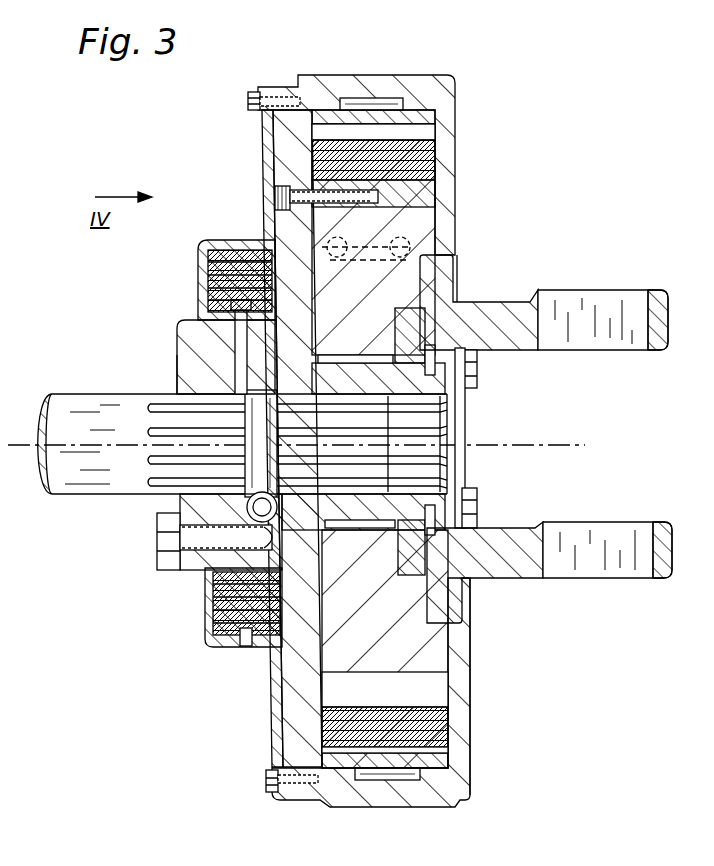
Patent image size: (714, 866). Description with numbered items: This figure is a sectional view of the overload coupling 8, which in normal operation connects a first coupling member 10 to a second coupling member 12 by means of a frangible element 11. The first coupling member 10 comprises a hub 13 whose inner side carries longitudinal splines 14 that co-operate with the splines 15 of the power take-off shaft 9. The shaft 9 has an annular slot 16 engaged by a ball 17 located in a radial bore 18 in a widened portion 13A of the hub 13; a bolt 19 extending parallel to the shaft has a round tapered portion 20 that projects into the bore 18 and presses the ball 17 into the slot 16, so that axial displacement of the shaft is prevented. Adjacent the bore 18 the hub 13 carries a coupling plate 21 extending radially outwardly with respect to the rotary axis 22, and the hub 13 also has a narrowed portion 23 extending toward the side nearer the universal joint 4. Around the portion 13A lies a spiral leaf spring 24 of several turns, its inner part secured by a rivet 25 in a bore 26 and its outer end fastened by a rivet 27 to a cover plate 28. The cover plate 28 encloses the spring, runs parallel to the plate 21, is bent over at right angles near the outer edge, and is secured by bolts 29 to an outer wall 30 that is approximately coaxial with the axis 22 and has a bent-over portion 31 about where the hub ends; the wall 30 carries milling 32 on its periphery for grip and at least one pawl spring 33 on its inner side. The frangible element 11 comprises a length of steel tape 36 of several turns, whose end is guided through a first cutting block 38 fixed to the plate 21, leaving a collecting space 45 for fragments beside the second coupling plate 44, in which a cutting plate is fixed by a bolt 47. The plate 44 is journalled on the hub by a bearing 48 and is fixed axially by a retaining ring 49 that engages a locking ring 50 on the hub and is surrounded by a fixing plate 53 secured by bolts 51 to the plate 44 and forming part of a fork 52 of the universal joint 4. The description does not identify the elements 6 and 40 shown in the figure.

The universal joint 4 is at (640, 290).
The upper flange arm 6 is at (462, 283).
The overload coupling 8 is at (504, 688).
The power take-off shaft 9 is at (92, 397).
The first coupling member 10 is at (172, 330).
The frangible element 11 is at (437, 165).
The second coupling member 12 is at (470, 630).
The hub 13 is at (477, 378).
The widened portion 13A is at (178, 368).
The longitudinal splines 14 is at (440, 418).
The splines 15 is at (160, 480).
The annular slot 16 is at (250, 426).
The ball 17 is at (278, 510).
The radial bore 18 is at (276, 552).
The bolt 19 is at (186, 570).
The round tapered portion 20 is at (244, 538).
The coupling plate 21 is at (290, 676).
The rotary axis 22 is at (548, 437).
The narrowed portion 23 is at (455, 495).
The spiral leaf spring 24 is at (210, 283).
The rivet 25 is at (247, 348).
The bore 26 is at (247, 373).
The rivet 27 is at (242, 645).
The cover plate 28 is at (276, 722).
The bolts 29 is at (248, 102).
The outer wall 30 is at (472, 792).
The bent-over portion 31 is at (455, 128).
The milling 32 is at (335, 812).
The pawl spring 33 is at (395, 96).
The steel tape 36 is at (448, 728).
The first cutting block 38 is at (437, 196).
The screw 40 is at (275, 196).
The second coupling plate 44 is at (360, 676).
The collecting space 45 is at (448, 690).
The bolt 47 is at (352, 268).
The bearing 48 is at (350, 352).
The retaining ring 49 is at (432, 345).
The locking ring 50 is at (395, 318).
The bolts 51 is at (477, 503).
The fork 52 is at (545, 580).
The fixing plate 53 is at (462, 610).